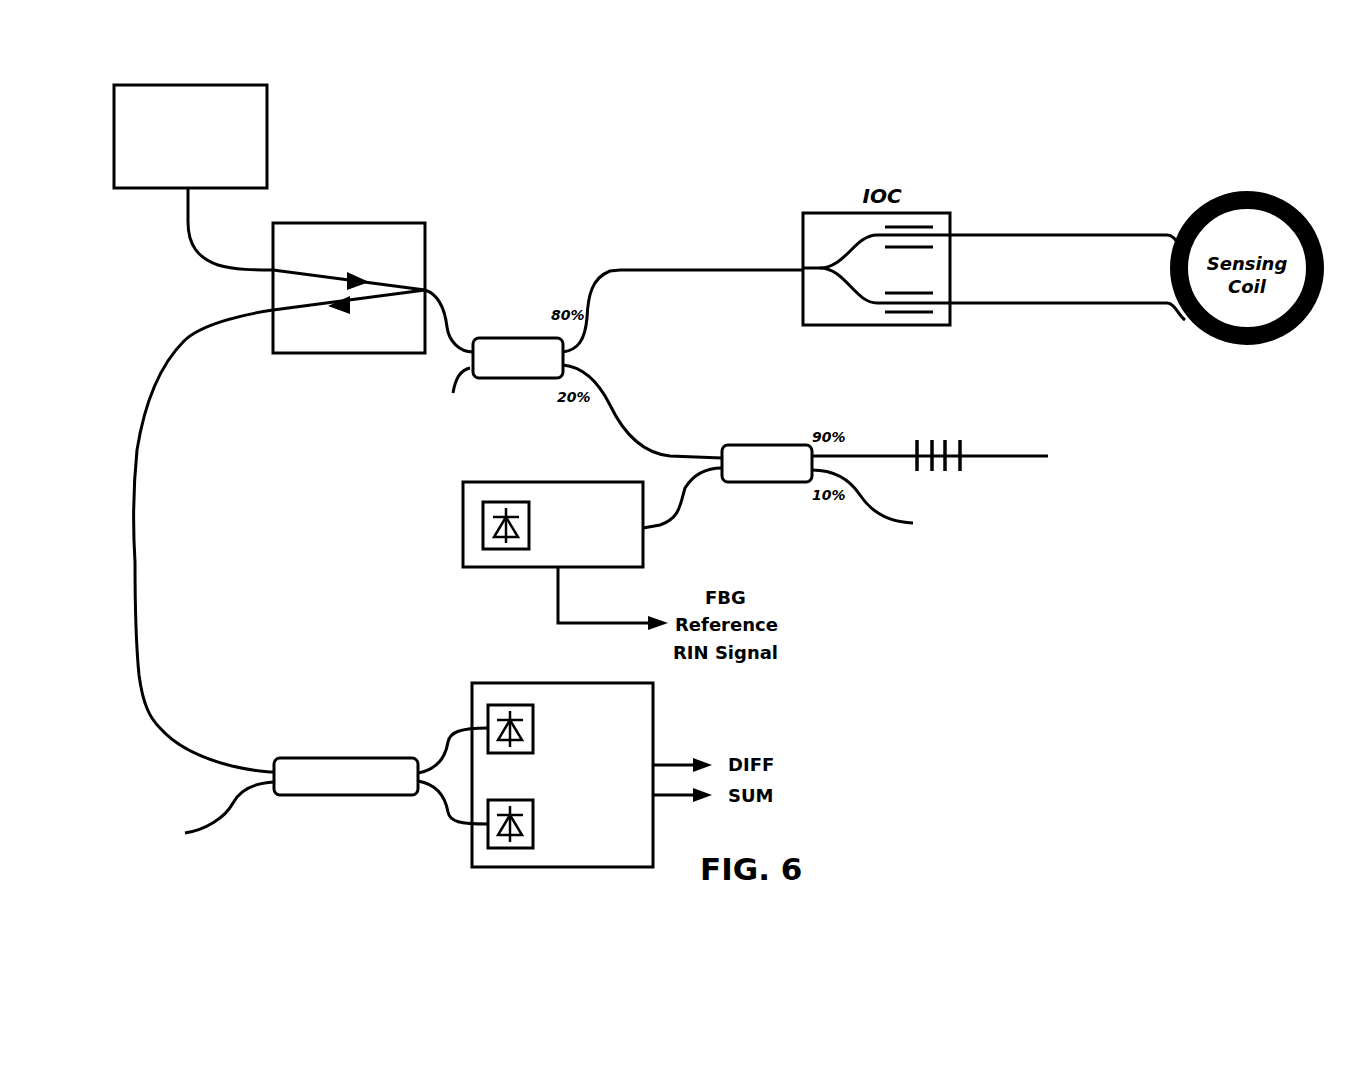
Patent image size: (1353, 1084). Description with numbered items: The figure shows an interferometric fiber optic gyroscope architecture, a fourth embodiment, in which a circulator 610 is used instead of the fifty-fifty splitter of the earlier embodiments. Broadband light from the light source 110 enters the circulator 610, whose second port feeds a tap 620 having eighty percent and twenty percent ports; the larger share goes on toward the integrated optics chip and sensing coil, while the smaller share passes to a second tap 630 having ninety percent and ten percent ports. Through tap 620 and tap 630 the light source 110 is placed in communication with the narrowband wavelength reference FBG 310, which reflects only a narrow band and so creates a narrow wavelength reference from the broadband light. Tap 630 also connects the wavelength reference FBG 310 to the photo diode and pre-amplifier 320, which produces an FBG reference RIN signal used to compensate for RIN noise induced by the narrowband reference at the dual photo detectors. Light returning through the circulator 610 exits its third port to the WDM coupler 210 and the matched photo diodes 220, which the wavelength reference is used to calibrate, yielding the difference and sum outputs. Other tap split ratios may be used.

The light source 110 is at (268, 133).
The circulator 610 is at (363, 223).
The tap 620 is at (513, 337).
The tap 630 is at (737, 445).
The wavelength reference FBG 310 is at (963, 442).
The photo diode and pre-amplifier 320 is at (497, 482).
The matched photo diodes 220 is at (498, 681).
The WDM coupler 210 is at (345, 756).